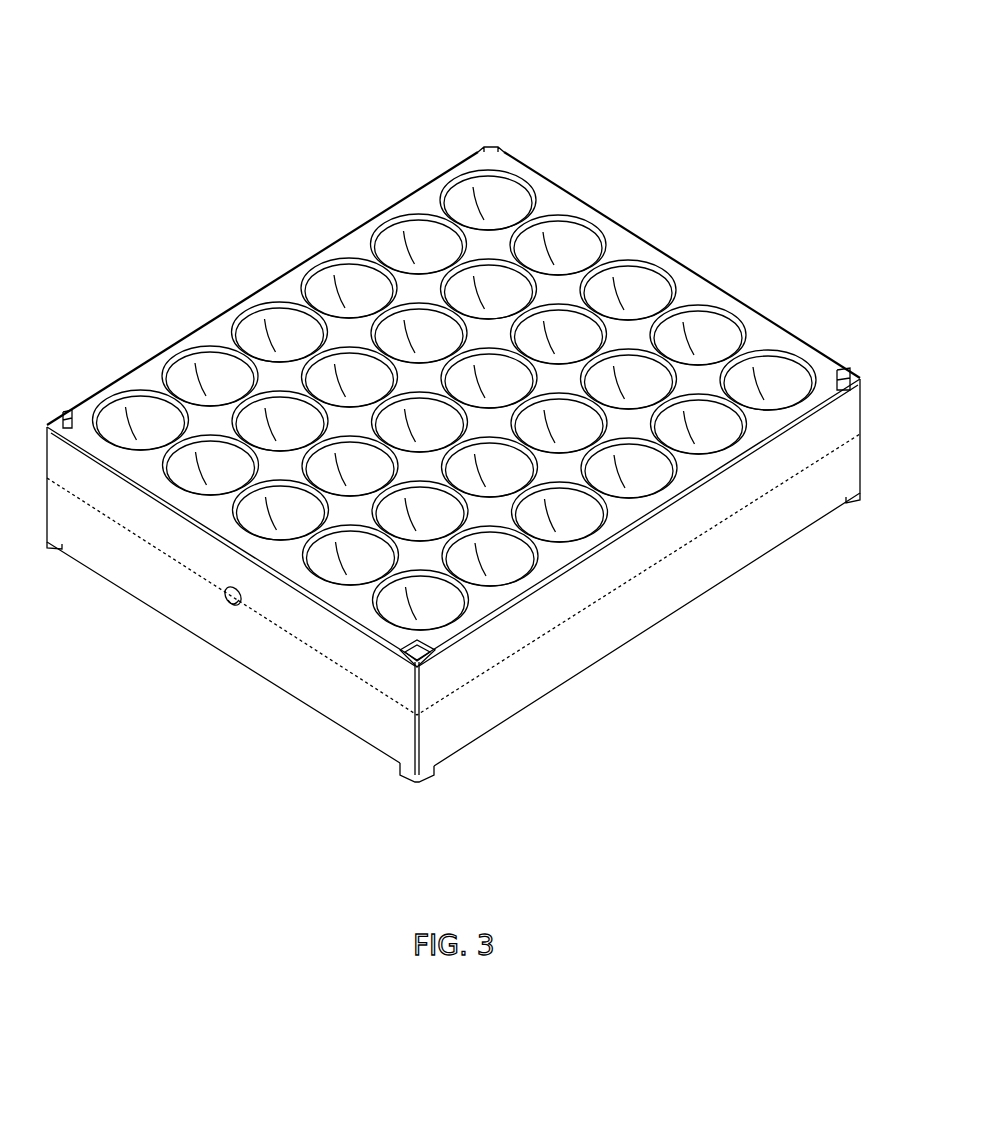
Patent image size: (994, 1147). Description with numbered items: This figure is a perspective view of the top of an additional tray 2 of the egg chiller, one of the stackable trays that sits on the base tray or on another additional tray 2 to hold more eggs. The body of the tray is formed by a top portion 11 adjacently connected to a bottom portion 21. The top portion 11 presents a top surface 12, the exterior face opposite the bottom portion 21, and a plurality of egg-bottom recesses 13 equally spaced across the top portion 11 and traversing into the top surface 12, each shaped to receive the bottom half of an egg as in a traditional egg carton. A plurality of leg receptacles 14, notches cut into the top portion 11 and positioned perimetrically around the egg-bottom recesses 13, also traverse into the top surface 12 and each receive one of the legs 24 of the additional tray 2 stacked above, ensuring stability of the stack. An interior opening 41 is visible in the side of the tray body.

The additional tray 2 is at (436, 50).
The top portion 11 is at (658, 556).
The top surface 12 is at (695, 288).
The egg-bottom recesses 13 is at (302, 346).
The leg receptacles 14 is at (494, 150).
The bottom portion 21 is at (663, 606).
The legs 24 is at (58, 549).
The interior opening 41 is at (214, 609).